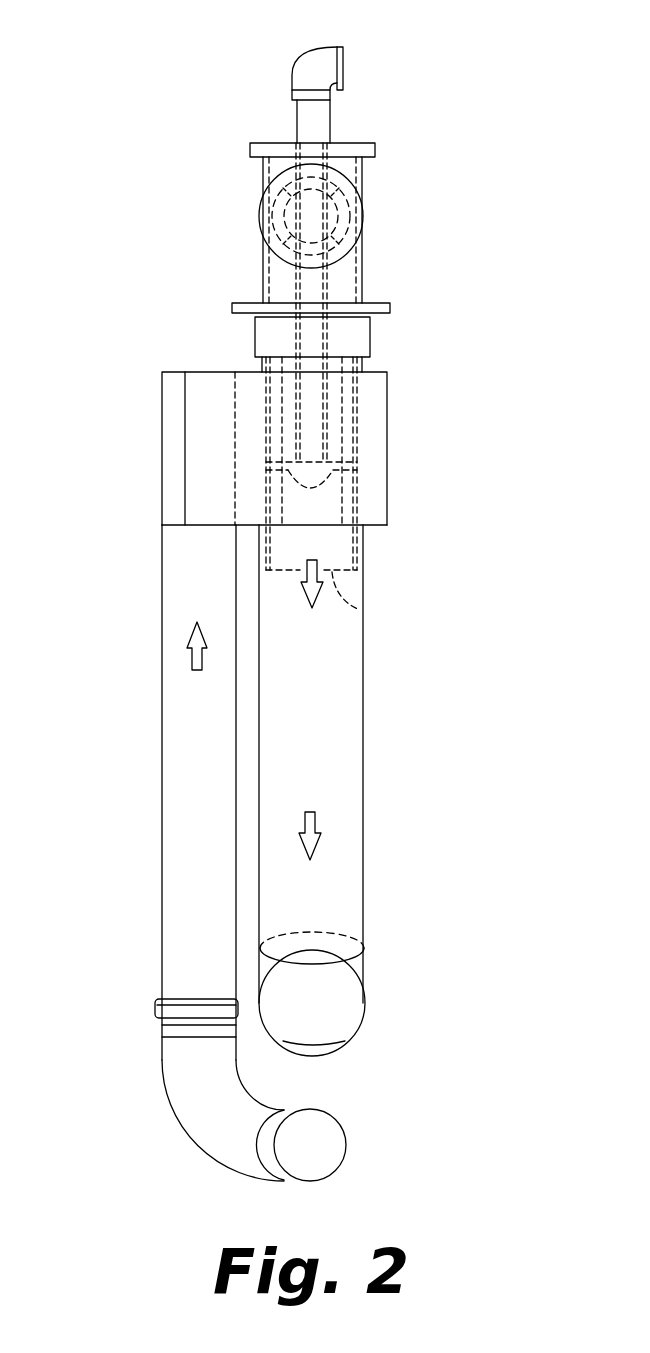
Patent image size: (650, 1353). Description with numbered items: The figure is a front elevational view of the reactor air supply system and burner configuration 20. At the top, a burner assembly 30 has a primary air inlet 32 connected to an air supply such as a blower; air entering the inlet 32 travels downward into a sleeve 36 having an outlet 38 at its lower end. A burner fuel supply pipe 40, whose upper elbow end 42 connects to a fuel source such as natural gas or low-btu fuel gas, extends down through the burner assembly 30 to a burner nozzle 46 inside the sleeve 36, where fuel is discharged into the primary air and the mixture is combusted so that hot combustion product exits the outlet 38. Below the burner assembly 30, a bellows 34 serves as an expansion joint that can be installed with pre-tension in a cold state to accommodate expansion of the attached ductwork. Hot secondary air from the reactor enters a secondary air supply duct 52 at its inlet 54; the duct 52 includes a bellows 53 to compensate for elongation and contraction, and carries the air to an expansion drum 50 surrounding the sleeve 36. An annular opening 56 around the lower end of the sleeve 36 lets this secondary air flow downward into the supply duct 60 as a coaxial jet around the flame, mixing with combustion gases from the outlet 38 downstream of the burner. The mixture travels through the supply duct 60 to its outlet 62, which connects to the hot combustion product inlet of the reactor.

The reactor air supply system and burner configuration 20 is at (279, 593).
The burner fuel supply pipe 40 is at (281, 233).
The inlet opening 42 is at (388, 77).
The burner assembly 30 is at (287, 228).
The primary air inlet 32 is at (349, 216).
The bellows 34 is at (282, 343).
The expansion drum 50 is at (312, 441).
The burner nozzle 46 is at (354, 472).
The sleeve 36 is at (307, 517).
The annular opening 56 is at (366, 482).
The outlet 38 is at (389, 606).
The secondary air supply duct 52 is at (196, 853).
The bellows 53 is at (165, 1012).
The inlet 54 is at (342, 1145).
The supply duct 60 is at (358, 764).
The outlet 62 is at (358, 994).